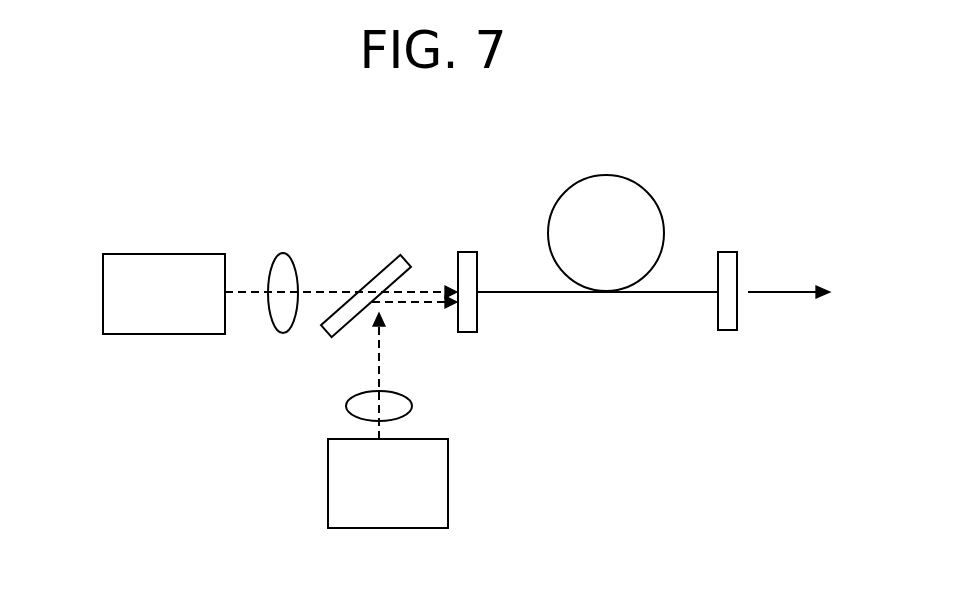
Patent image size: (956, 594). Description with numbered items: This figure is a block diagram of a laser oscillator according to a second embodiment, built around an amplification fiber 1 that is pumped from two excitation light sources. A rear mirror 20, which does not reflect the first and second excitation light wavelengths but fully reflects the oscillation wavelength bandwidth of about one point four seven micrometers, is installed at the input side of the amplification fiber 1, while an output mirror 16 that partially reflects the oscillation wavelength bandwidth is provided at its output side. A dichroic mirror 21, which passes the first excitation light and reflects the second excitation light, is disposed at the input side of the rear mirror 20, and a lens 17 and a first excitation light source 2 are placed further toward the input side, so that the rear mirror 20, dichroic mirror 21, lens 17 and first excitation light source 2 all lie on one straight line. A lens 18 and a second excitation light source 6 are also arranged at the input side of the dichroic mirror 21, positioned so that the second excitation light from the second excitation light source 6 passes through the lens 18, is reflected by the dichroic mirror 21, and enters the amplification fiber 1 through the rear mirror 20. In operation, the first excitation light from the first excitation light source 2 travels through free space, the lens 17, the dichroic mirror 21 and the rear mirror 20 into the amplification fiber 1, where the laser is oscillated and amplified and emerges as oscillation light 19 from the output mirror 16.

The amplification fiber 1 is at (590, 176).
The first excitation light source 2 is at (162, 254).
The second excitation light source 6 is at (448, 485).
The output mirror 16 is at (730, 252).
The lens 17 is at (283, 253).
The lens 18 is at (413, 403).
The oscillation light 19 is at (785, 292).
The rear mirror 20 is at (466, 252).
The dichroic mirror 21 is at (392, 256).